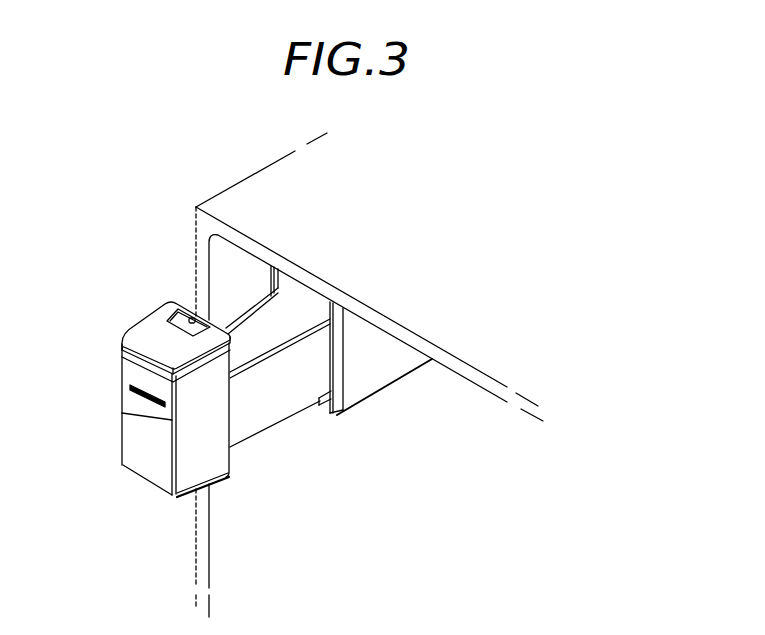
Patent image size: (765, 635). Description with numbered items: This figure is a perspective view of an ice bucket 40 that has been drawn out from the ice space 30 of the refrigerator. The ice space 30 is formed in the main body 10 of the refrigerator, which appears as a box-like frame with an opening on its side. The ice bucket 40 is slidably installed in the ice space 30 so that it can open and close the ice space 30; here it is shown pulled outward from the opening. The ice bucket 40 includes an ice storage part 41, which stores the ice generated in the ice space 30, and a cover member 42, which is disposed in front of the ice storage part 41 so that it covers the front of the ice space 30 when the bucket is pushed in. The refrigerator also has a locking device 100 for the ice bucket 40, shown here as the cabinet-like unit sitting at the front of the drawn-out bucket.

The main body 10 is at (268, 181).
The ice space 30 is at (379, 369).
The ice bucket 40 is at (357, 495).
The ice storage part 41 is at (270, 403).
The cover member 42 is at (217, 463).
The locking device 100 is at (155, 307).